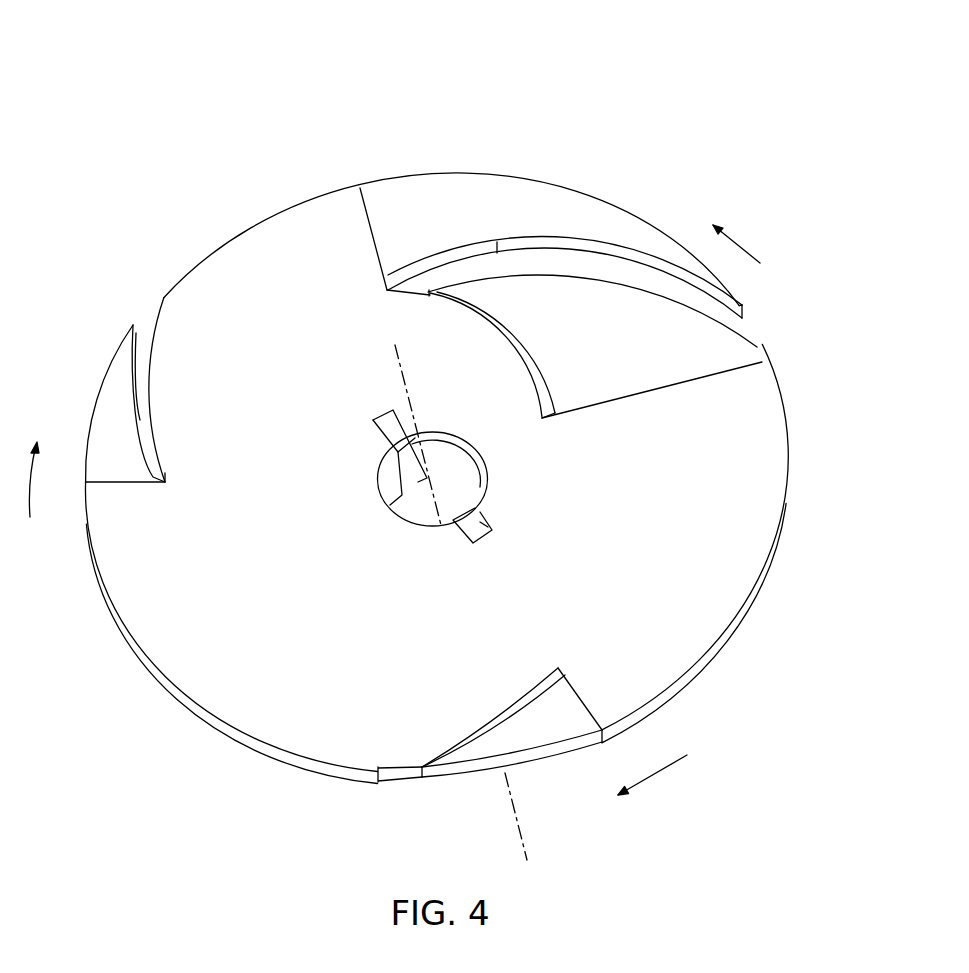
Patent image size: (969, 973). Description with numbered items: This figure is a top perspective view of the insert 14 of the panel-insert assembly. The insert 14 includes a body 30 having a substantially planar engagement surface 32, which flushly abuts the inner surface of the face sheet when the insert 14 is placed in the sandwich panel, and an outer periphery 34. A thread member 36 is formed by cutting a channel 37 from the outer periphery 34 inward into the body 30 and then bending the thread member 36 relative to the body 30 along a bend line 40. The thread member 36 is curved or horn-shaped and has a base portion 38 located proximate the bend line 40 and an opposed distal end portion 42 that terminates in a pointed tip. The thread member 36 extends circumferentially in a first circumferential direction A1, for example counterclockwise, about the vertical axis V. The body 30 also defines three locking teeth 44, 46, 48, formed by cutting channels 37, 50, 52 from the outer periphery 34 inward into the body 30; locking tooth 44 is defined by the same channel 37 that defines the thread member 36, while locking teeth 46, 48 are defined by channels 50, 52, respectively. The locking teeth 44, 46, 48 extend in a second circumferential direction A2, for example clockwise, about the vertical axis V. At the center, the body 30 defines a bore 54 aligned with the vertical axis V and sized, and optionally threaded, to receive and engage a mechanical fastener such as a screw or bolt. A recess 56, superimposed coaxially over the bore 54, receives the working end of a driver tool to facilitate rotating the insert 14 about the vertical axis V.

The insert 14 is at (690, 78).
The body 30 is at (772, 433).
The engagement surface 32 is at (617, 570).
The outer periphery 34 is at (748, 608).
The thread member 36 is at (586, 350).
The channel 37 is at (603, 267).
The base portion 38 is at (732, 352).
The bend line 40 is at (633, 398).
The distal end portion 42 is at (483, 288).
The locking tooth 44 is at (532, 198).
The locking tooth 46 is at (100, 447).
The locking tooth 48 is at (557, 735).
The channel 50 is at (143, 417).
The channel 52 is at (492, 728).
The bore 54 is at (476, 468).
The recess 56 is at (483, 522).
The vertical axis V is at (413, 400).
The first circumferential direction A1 is at (743, 236).
The second circumferential direction A2 is at (30, 513).